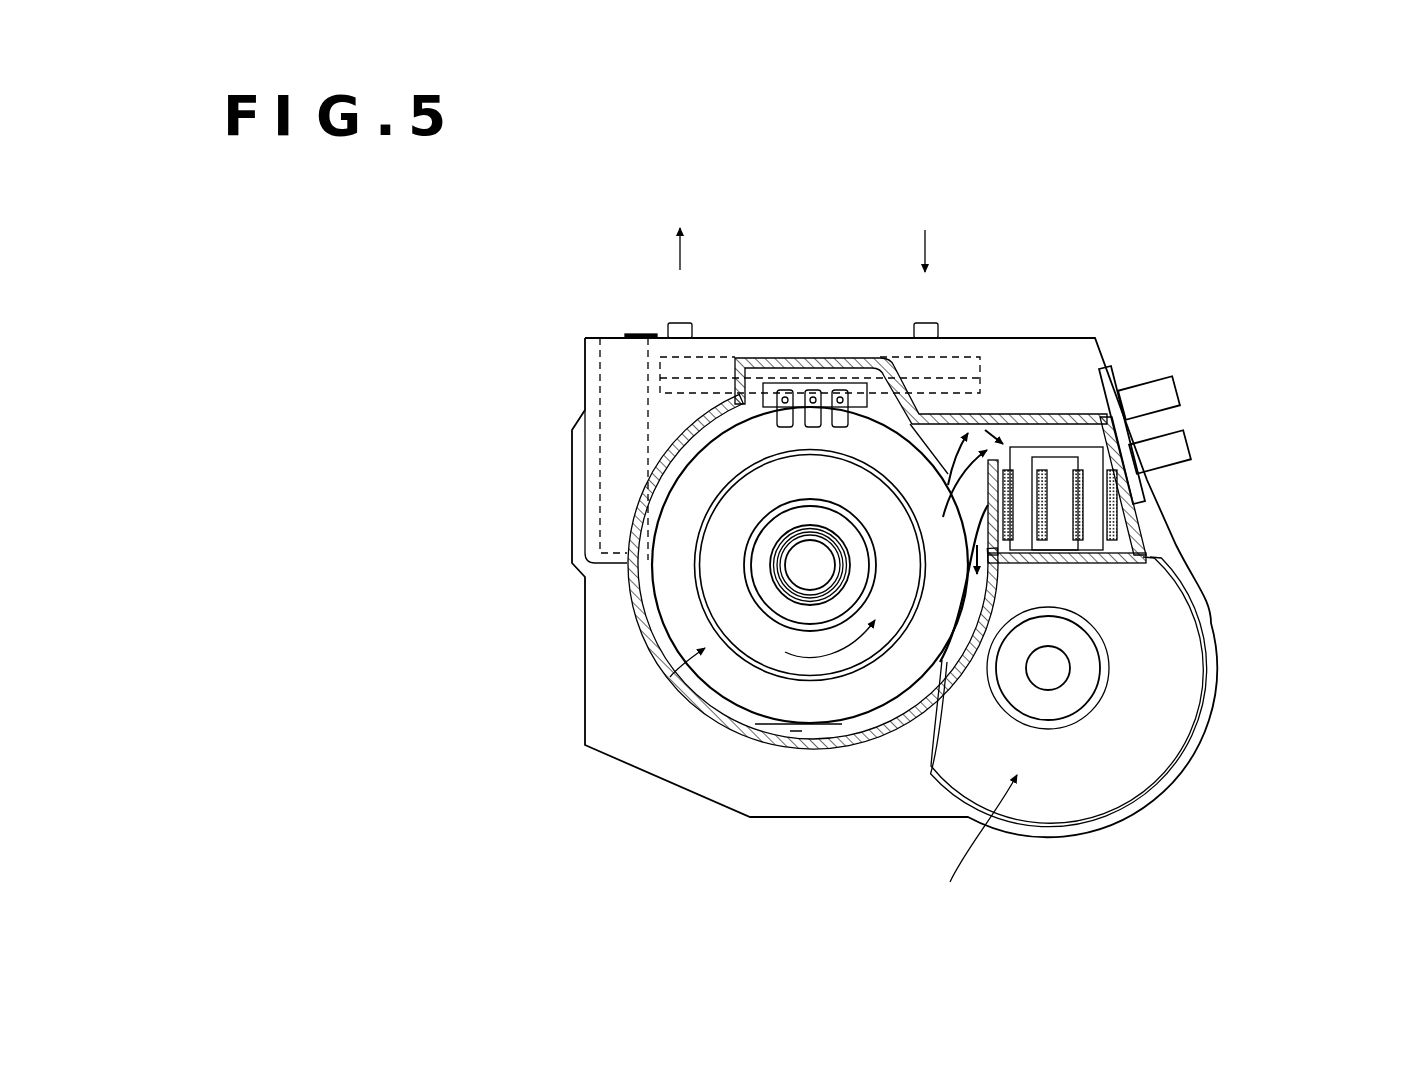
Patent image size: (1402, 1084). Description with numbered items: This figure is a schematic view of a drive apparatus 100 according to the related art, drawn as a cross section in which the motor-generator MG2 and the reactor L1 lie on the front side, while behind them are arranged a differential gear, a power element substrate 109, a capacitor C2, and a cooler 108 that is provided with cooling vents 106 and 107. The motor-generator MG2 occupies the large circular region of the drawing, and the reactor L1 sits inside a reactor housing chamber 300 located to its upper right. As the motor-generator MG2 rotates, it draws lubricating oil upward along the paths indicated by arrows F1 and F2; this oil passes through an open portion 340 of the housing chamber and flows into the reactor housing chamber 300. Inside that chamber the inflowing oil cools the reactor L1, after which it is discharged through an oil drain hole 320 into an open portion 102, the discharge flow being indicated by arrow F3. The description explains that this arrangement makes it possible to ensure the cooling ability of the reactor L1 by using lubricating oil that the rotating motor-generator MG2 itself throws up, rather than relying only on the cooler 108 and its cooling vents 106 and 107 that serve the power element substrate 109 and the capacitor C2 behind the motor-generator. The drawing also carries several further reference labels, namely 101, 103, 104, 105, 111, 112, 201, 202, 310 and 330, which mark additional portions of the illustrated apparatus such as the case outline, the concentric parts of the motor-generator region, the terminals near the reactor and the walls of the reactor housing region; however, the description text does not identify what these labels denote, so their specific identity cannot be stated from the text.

The drive apparatus 100 is at (855, 155).
The case (housing) 101 is at (630, 770).
The open portion 102 is at (712, 700).
The rotor 103 is at (677, 633).
The rotor core 104 is at (740, 577).
The rotating shaft 105 is at (787, 562).
The cooling vent 106 is at (690, 322).
The cooling vent 107 is at (924, 322).
The cooler 108 is at (740, 352).
The power element substrate 109 is at (665, 393).
The connector terminal 111 is at (1172, 392).
The connector terminal 112 is at (1187, 447).
The partition wall 201 is at (1095, 563).
The side wall 202 is at (1123, 540).
The reactor housing chamber 300 is at (1037, 440).
The motor housing wall 310 is at (908, 755).
The oil drain hole 320 is at (1080, 568).
The side plate 330 is at (1063, 410).
The open portion 340 is at (968, 412).
The capacitor C2 is at (600, 354).
The reactor L1 is at (1147, 490).
The motor-generator MG2 is at (662, 684).
The arrow (oil flow) F1 is at (958, 500).
The arrow (oil flow) F2 is at (918, 414).
The arrow (oil flow) F3 is at (1000, 566).